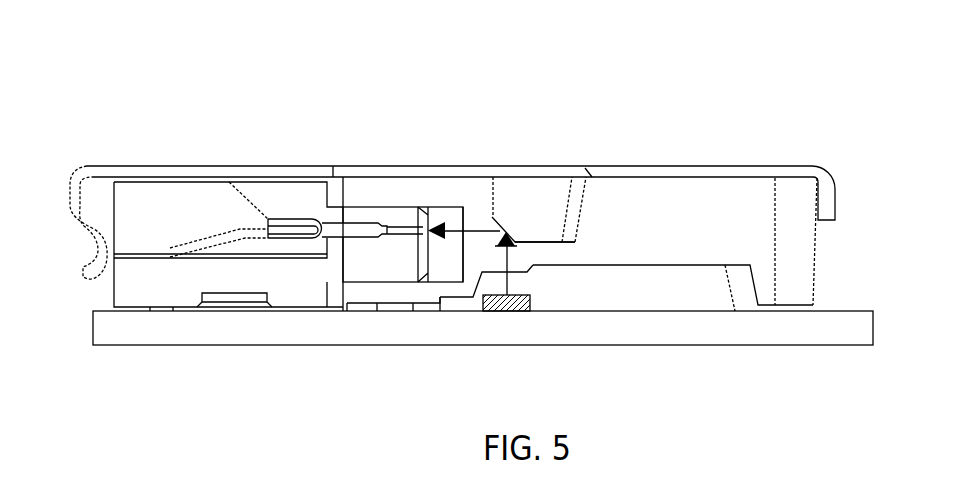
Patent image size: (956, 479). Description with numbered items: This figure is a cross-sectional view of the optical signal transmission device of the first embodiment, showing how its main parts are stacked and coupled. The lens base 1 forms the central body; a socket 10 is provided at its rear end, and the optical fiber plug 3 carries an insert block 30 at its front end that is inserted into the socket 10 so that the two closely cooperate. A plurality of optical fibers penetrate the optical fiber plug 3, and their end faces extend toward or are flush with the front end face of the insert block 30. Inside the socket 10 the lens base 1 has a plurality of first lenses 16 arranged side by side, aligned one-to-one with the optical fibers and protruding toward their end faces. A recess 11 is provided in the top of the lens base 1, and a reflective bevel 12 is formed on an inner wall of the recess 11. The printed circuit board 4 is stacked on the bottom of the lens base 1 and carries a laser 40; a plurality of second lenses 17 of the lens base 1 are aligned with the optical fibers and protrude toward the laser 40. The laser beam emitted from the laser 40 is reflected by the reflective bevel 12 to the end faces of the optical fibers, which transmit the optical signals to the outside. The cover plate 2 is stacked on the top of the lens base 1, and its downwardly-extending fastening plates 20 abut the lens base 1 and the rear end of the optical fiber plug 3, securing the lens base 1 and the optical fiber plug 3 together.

The lens base 1 is at (792, 243).
The cover plate 2 is at (656, 165).
The optical fiber plug 3 is at (155, 278).
The printed circuit board 4 is at (218, 328).
The socket 10 is at (443, 268).
The recess 11 is at (547, 195).
The reflective bevel 12 is at (500, 217).
The first lenses 16 is at (465, 229).
The second lenses 17 is at (512, 273).
The fastening plates 20 is at (838, 200).
The insert block 30 is at (379, 211).
The laser 40 is at (522, 303).